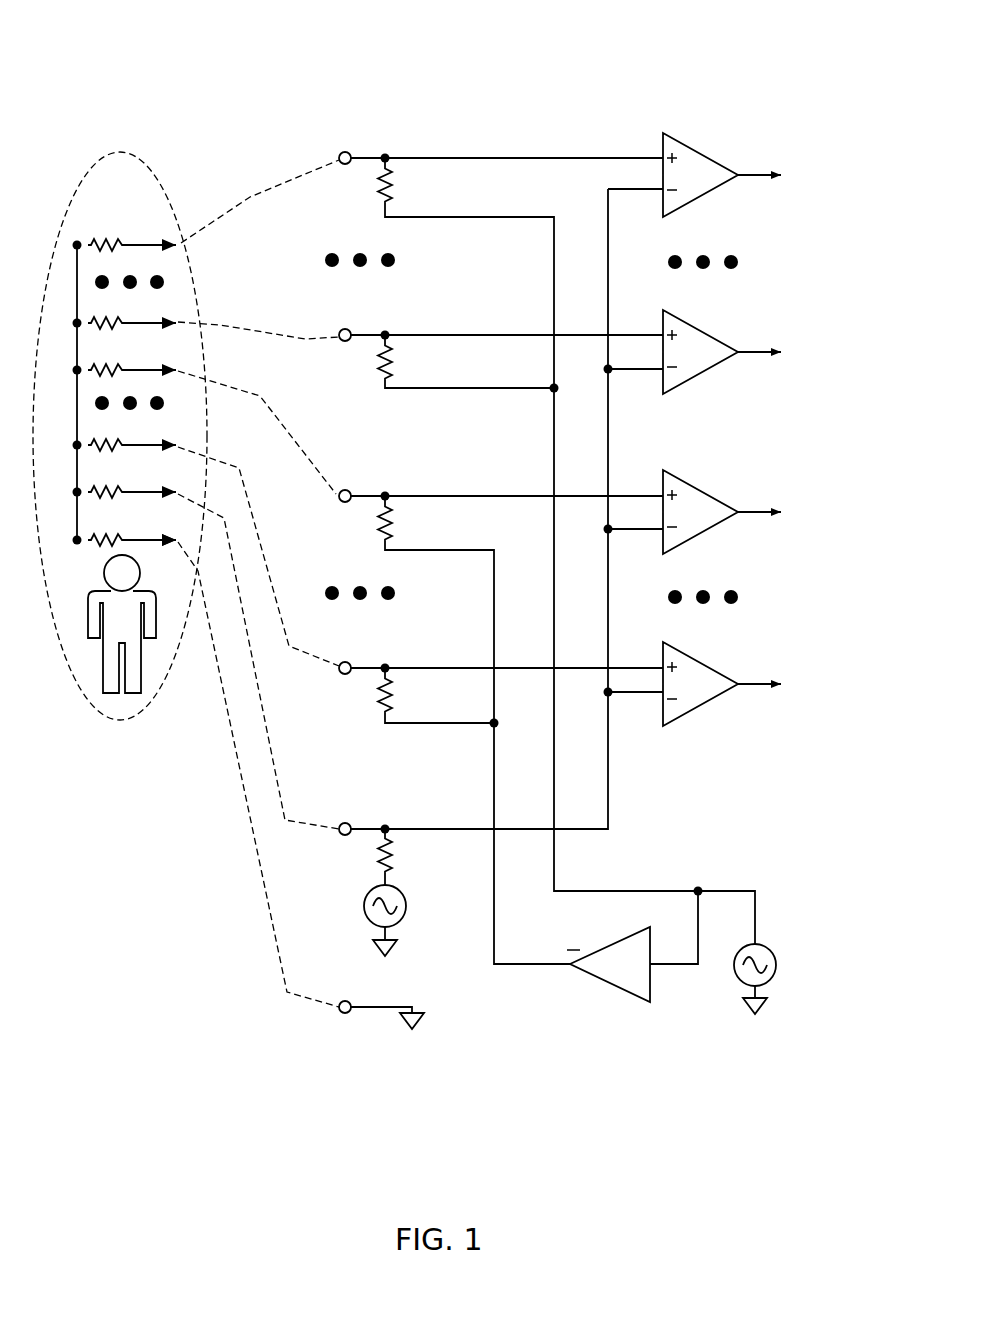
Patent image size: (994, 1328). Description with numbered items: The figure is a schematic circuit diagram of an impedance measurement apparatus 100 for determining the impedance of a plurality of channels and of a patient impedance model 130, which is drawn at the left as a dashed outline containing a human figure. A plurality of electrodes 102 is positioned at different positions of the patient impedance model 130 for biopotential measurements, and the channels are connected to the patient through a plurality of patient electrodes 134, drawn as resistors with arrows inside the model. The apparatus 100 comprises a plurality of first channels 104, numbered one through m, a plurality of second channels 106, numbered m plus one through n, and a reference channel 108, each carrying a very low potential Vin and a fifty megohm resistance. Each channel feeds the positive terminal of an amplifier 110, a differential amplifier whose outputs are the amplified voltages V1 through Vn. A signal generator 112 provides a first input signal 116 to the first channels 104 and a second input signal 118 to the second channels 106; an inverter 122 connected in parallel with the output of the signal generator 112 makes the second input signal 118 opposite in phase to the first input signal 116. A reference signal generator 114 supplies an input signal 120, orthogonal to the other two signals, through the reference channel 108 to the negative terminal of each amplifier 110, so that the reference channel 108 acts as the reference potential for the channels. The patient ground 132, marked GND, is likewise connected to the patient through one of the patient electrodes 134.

The impedance measurement apparatus 100 is at (559, 62).
The electrodes 102 is at (340, 153).
The first channels 104 is at (447, 152).
The second channels 106 is at (447, 490).
The reference channel 108 is at (447, 823).
The amplifier 110 is at (690, 151).
The signal generator 112 is at (762, 945).
The reference signal generator 114 is at (369, 891).
The first input signal 116 is at (645, 890).
The second input signal 118 is at (496, 967).
The input signal 120 is at (623, 192).
The inverter 122 is at (603, 981).
The patient impedance model 130 is at (110, 152).
The patient ground 132 is at (343, 1013).
The patient electrodes 134 is at (168, 240).